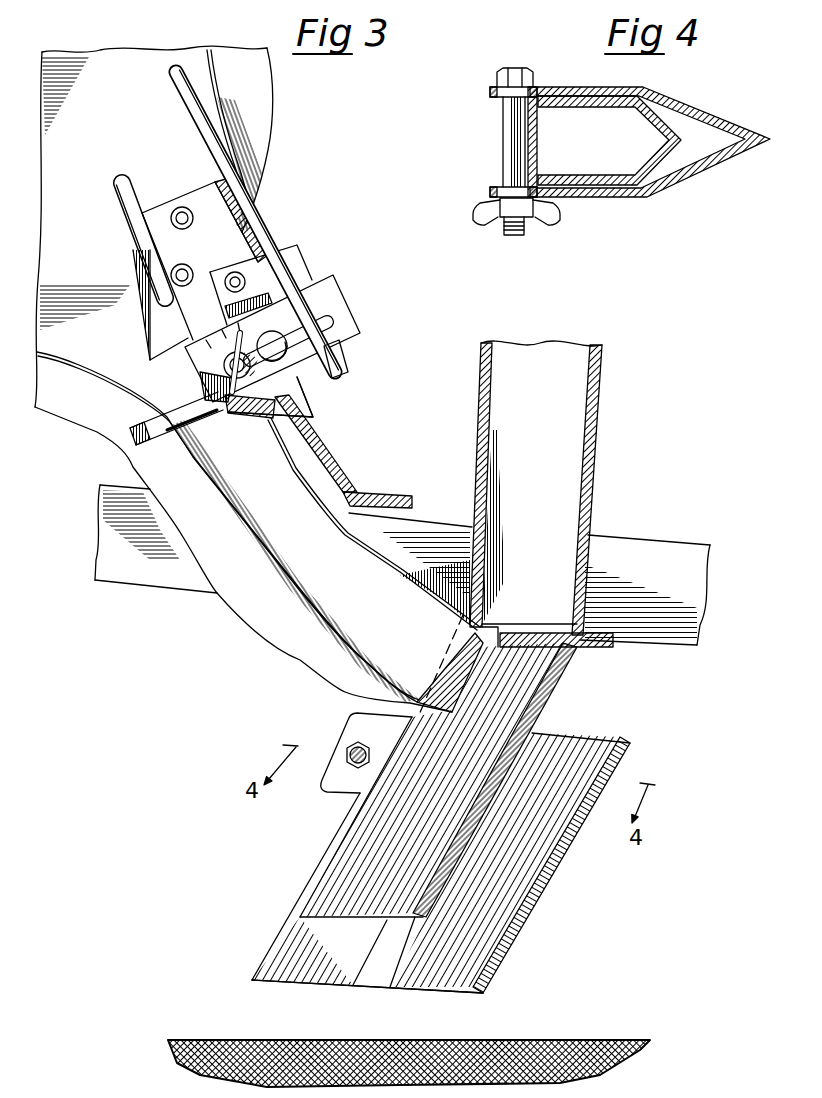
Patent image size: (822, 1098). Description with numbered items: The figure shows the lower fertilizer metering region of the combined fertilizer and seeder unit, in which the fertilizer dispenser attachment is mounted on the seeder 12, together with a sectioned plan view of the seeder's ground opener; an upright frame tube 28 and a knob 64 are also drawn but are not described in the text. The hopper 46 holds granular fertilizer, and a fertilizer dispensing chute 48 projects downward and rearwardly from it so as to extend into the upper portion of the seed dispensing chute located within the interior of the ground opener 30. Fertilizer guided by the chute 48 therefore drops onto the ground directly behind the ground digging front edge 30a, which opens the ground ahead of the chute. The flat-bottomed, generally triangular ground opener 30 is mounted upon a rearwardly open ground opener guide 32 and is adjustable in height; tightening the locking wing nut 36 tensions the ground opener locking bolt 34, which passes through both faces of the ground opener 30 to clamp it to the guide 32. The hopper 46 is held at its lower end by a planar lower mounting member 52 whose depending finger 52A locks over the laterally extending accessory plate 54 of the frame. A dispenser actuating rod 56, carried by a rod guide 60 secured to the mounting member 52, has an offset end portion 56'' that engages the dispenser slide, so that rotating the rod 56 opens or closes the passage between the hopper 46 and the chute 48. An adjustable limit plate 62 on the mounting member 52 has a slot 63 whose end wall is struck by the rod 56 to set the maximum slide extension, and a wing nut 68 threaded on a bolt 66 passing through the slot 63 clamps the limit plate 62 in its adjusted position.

In FIG. 3, the fertilizer hopper 46 is at (110, 58).
In FIG. 3, the fertilizer dispensing chute 48 is at (308, 587).
In FIG. 3, the seeder 12 is at (427, 513).
In FIG. 3, the upright tube 28 is at (598, 420).
In FIG. 3, the lower mounting member 52 is at (198, 195).
In FIG. 3, the depending finger 52A is at (314, 417).
In FIG. 3, the accessory plate crossmember 54 is at (333, 455).
In FIG. 3, the dispenser actuating rod 56 is at (257, 221).
In FIG. 3, the offset end portion 56'' is at (369, 357).
In FIG. 3, the rod guide 60 is at (297, 248).
In FIG. 3, the adjustable limit plate 62 is at (334, 277).
In FIG. 3, the slot 63 is at (330, 316).
In FIG. 3, the knob 64 is at (272, 340).
In FIG. 3, the bolt 66 is at (220, 370).
In FIG. 3, the wing nut 68 is at (223, 407).
In FIG. 3, the ground opener 30 is at (588, 733).
In FIG. 4, the ground opener 30 is at (727, 112).
In FIG. 3, the ground digging front edge 30a is at (483, 993).
In FIG. 3, the ground opener guide 32 is at (563, 672).
In FIG. 4, the ground opener guide 32 is at (580, 108).
In FIG. 3, the ground opener locking bolt 34 is at (356, 748).
In FIG. 4, the ground opener locking bolt 34 is at (501, 135).
In FIG. 4, the locking wing nut 36 is at (546, 221).